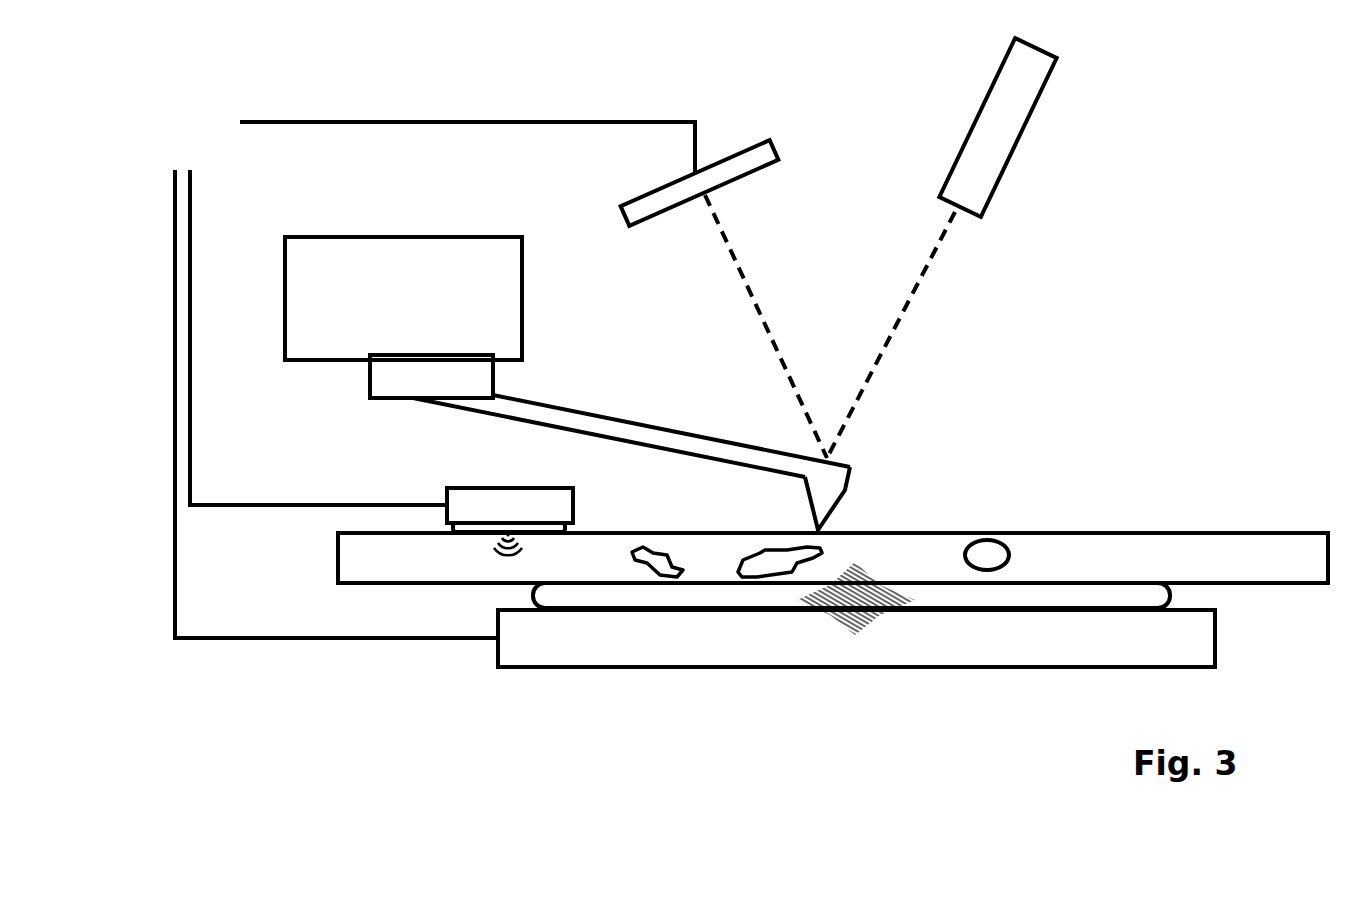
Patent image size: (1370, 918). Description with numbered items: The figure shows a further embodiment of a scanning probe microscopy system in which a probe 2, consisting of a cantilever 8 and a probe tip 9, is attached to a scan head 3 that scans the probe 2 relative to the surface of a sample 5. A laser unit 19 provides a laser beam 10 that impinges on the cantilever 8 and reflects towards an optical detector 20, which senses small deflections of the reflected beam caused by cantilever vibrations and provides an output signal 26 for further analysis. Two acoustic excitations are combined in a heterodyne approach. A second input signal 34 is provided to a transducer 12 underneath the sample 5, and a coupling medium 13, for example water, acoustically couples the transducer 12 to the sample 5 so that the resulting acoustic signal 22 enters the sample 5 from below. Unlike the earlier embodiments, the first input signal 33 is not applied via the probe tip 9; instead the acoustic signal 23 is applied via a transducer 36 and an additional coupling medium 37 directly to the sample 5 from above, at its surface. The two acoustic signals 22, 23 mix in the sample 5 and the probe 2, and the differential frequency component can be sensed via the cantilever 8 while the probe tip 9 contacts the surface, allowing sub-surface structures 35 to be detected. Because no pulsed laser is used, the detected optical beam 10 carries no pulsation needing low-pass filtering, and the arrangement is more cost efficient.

The probe 2 is at (600, 414).
The scan head 3 is at (383, 237).
The sample 5 is at (1143, 533).
The cantilever 8 is at (727, 443).
The probe tip 9 is at (838, 512).
The laser beam 10 is at (895, 320).
The transducer 12 is at (590, 667).
The coupling medium 13 is at (1172, 592).
The laser unit 19 is at (1020, 128).
The optical detector 20 is at (742, 178).
The acoustic signal 22 is at (870, 565).
The acoustic signal 23 is at (495, 550).
The output signal 26 is at (540, 122).
The first input signal 33 is at (244, 505).
The second input signal 34 is at (262, 638).
The sub-surface structures 35 is at (675, 552).
The transducer 36 is at (465, 488).
The additional coupling medium 37 is at (570, 530).